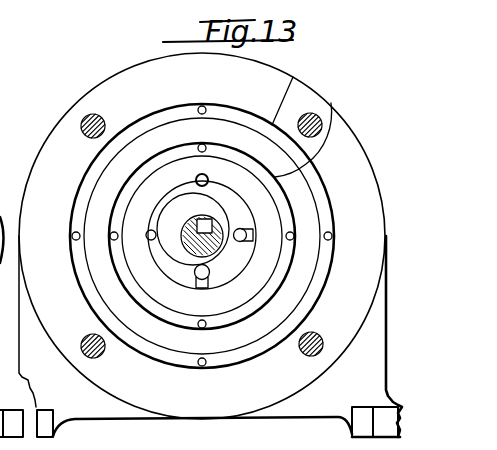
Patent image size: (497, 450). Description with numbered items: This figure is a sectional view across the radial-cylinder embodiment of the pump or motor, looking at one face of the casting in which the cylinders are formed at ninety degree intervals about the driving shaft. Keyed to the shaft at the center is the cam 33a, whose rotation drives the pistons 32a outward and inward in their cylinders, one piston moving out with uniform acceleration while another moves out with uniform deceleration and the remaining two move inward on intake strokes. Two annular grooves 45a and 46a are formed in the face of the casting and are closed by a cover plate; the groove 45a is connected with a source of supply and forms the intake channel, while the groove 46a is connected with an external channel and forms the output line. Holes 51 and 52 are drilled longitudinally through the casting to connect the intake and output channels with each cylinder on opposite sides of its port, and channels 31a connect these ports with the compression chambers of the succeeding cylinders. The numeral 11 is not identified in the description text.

The housing base 11 is at (170, 449).
The channels 31a is at (212, 221).
The pistons 32a is at (9, 157).
The cam 33a is at (170, 208).
The annular groove 45a is at (293, 77).
The annular groove 46a is at (345, 91).
The hole 51 is at (328, 232).
The hole 52 is at (292, 230).